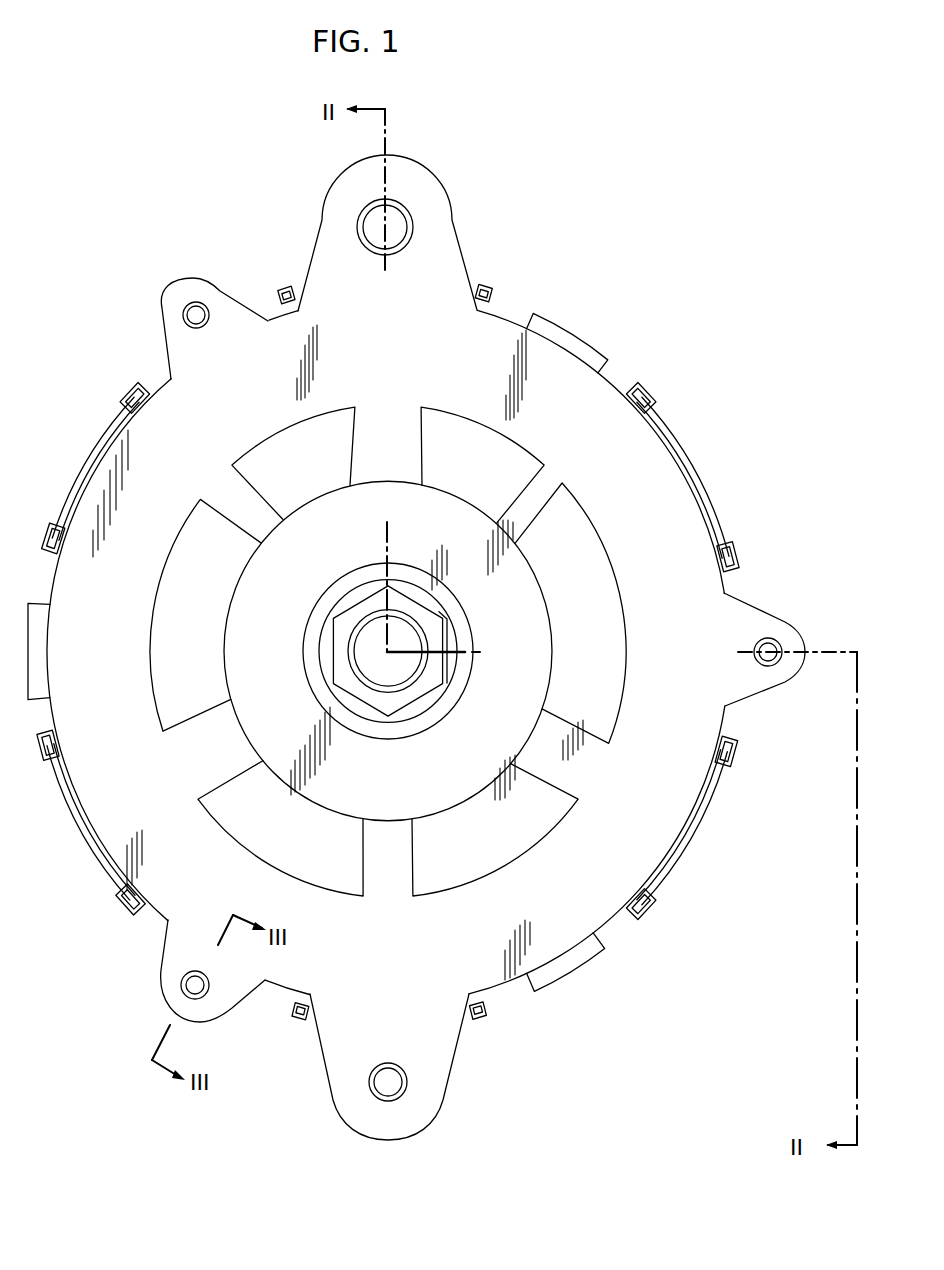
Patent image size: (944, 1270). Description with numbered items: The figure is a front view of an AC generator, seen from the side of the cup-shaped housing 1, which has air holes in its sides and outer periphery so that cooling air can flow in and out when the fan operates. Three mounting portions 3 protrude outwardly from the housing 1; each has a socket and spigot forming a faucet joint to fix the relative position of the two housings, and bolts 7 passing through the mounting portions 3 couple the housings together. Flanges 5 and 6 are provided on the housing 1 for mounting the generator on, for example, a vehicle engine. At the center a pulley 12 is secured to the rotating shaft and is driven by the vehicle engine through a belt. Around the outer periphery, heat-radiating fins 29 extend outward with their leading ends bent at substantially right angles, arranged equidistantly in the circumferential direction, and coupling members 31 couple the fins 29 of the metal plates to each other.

The housing 1 is at (613, 907).
The mounting portion 3 is at (223, 293).
The flange 5 is at (441, 186).
The flange 6 is at (446, 1068).
The bolt 7 is at (181, 980).
The pulley 12 is at (473, 793).
The heat-radiating fin 29 is at (95, 452).
The coupling member 31 is at (650, 402).